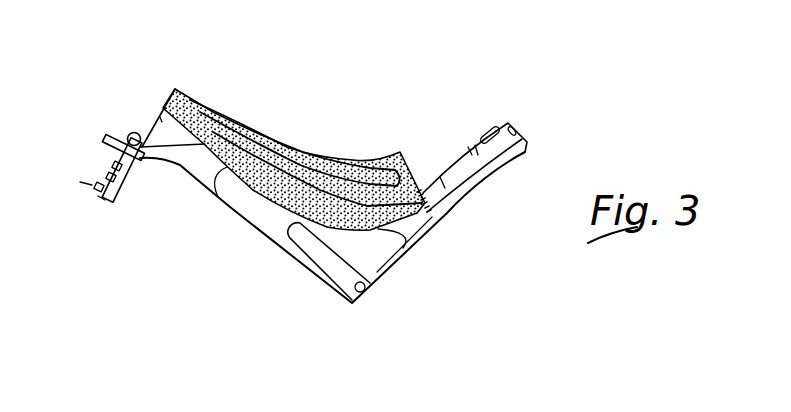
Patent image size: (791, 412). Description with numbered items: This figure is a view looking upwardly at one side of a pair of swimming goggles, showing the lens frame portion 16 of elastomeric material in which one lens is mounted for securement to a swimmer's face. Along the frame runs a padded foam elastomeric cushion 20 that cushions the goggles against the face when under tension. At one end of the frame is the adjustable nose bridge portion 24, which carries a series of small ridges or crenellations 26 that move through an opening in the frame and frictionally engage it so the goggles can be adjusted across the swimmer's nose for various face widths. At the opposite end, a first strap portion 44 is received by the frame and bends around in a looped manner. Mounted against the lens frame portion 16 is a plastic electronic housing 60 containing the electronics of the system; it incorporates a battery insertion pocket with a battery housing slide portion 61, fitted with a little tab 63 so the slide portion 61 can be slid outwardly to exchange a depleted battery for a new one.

The lens frame portion 16 is at (203, 165).
The padded foam elastomeric cushion 20 is at (345, 160).
The adjustable nose bridge portion 24 is at (113, 205).
The crenellations 26 is at (93, 172).
The first strap portion 44 is at (480, 180).
The electronic housing 60 is at (268, 230).
The battery housing slide portion 61 is at (322, 257).
The tab 63 is at (362, 295).